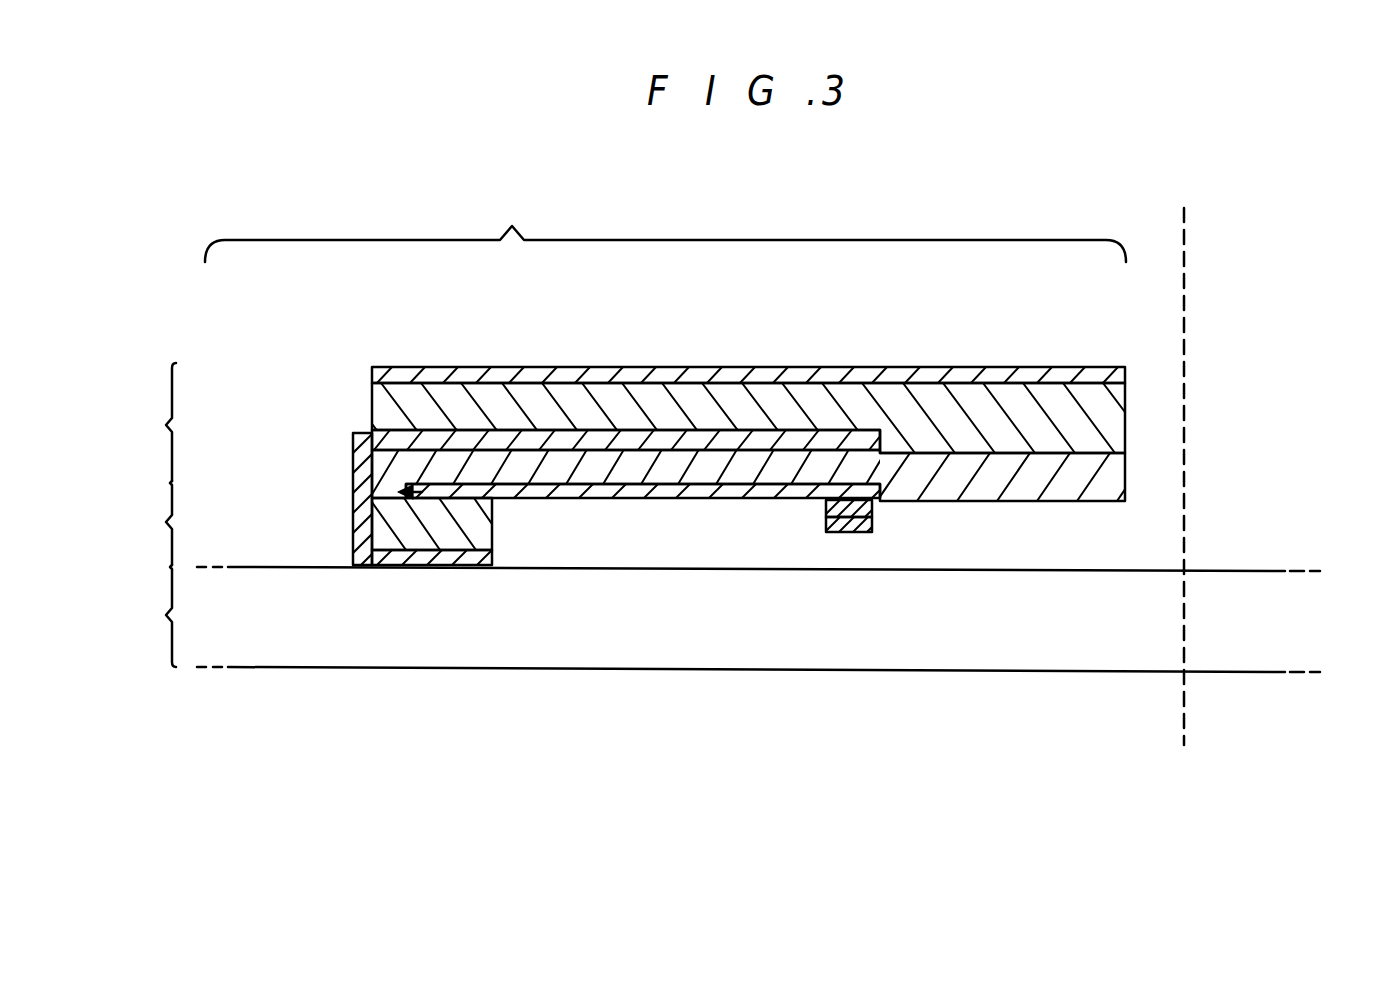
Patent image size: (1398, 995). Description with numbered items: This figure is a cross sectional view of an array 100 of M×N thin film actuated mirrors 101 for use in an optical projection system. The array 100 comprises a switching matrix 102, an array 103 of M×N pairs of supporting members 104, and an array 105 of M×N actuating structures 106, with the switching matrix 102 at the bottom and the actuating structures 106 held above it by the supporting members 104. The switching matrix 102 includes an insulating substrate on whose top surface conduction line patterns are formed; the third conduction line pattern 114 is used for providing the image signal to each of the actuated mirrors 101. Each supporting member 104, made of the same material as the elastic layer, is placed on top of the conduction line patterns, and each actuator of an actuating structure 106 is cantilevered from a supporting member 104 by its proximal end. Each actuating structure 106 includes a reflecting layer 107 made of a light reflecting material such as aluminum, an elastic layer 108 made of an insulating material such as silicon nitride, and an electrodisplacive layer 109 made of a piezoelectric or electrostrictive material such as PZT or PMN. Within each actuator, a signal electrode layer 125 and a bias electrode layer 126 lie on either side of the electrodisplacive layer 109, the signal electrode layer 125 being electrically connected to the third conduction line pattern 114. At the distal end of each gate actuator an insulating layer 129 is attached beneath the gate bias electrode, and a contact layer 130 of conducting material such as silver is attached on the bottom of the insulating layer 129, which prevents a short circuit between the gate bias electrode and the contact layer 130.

The array of M×N thin film actuated mirrors 100 is at (1314, 218).
The thin film actuated mirror 101 is at (665, 217).
The switching matrix 102 is at (118, 616).
The array of M×N pairs of supporting members 103 is at (116, 523).
The supporting member 104 is at (452, 522).
The array of M×N actuating structures 105 is at (118, 422).
The actuating structure 106 is at (853, 430).
The reflecting layer 107 is at (776, 375).
The elastic layer 108 is at (965, 418).
The electrodisplacive layer 109 is at (820, 468).
The third conduction line pattern 114 is at (440, 558).
The signal electrode layer 125 is at (380, 443).
The bias electrode layer 126 is at (657, 498).
The insulating layer 129 is at (830, 503).
The contact layer 130 is at (857, 540).